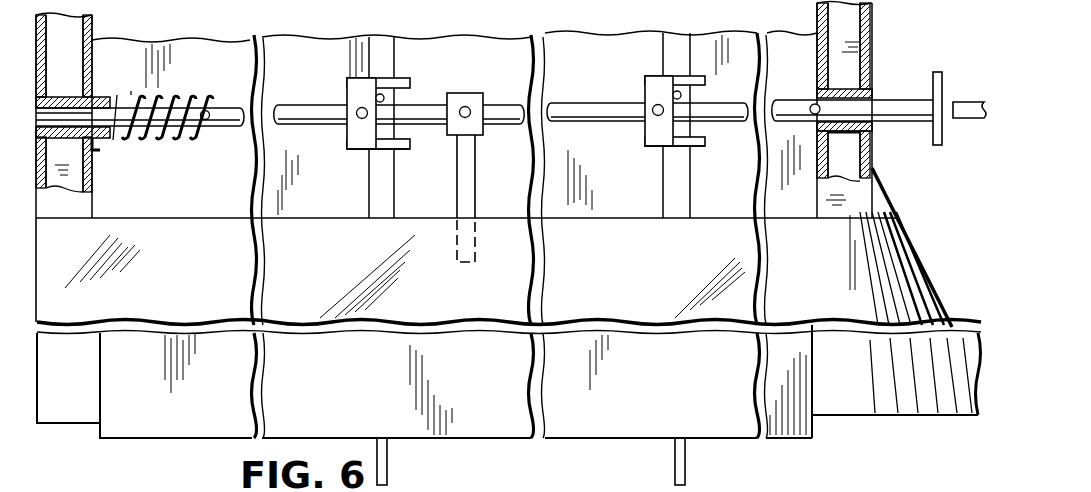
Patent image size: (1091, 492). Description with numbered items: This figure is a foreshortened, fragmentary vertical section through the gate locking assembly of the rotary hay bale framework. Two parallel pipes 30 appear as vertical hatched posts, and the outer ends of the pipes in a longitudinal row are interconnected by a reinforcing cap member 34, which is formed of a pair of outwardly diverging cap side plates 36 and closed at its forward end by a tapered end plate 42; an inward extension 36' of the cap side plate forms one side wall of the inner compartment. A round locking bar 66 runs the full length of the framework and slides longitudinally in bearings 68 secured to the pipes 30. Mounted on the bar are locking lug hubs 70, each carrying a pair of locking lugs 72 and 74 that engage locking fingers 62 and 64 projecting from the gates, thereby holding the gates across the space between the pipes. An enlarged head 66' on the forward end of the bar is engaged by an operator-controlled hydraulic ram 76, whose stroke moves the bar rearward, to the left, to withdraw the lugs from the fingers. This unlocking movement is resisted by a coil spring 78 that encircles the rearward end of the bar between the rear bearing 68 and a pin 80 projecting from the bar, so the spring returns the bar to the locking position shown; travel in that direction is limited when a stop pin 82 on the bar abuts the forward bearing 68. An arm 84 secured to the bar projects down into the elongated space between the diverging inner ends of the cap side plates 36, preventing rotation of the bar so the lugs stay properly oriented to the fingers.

The pipe 30 is at (92, 27).
The reinforcing cap member 34 is at (957, 324).
The cap side plate 36 is at (466, 333).
The inward extension of cap side plate 36' is at (454, 224).
The forward end plate 42 is at (904, 253).
The locking finger 62 is at (388, 470).
The locking finger 64 is at (390, 99).
The locking bar 66 is at (484, 96).
The enlarged head 66' is at (952, 90).
The bearing 68 is at (106, 98).
The locking lug hub 70 is at (353, 96).
The locking lug 72 is at (404, 150).
The locking lug 74 is at (388, 78).
The hydraulic ram 76 is at (964, 120).
The coil spring 78 is at (173, 110).
The pin 80 is at (204, 110).
The stop pin 82 is at (813, 104).
The arm 84 is at (470, 174).